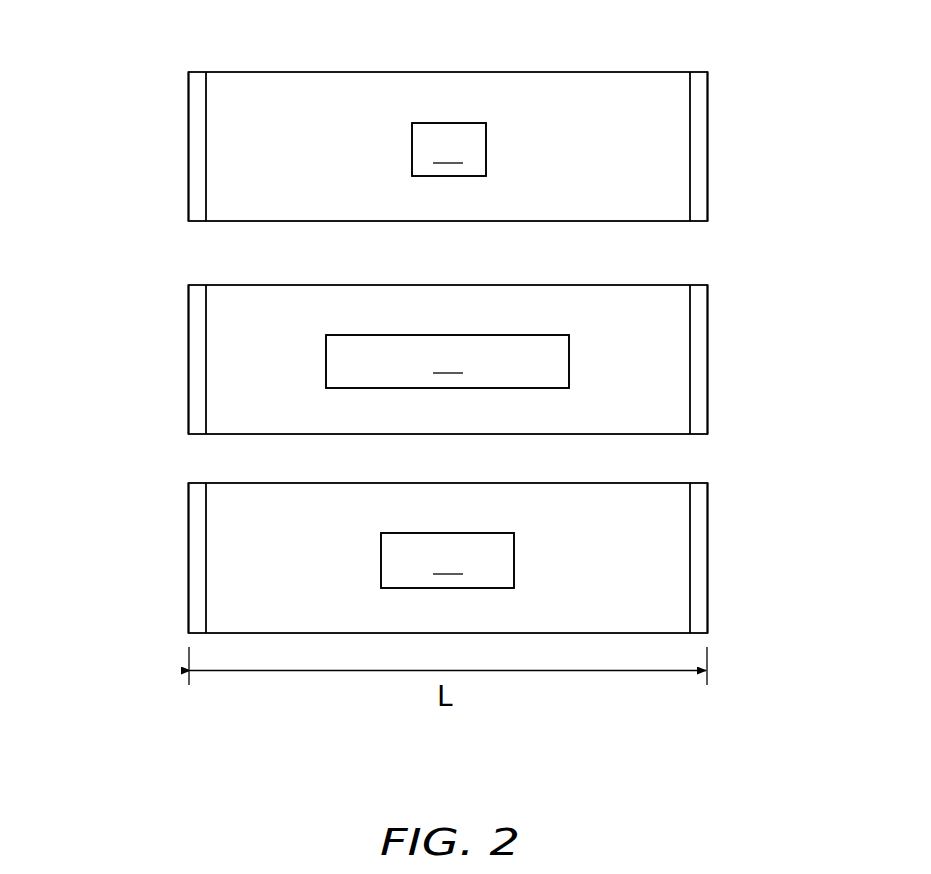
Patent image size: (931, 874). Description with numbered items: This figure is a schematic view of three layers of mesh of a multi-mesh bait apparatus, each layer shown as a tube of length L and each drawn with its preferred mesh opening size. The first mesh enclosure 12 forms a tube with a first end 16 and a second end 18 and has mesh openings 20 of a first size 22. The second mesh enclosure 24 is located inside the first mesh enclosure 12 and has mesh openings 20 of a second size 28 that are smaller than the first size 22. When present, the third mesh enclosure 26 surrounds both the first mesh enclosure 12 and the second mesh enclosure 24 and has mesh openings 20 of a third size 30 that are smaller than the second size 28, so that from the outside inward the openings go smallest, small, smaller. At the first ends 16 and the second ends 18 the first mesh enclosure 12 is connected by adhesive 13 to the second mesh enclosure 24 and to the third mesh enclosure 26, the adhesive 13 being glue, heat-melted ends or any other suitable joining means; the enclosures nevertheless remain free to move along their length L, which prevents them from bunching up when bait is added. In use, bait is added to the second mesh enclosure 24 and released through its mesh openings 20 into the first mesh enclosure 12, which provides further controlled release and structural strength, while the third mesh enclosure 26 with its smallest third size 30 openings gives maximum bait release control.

The first mesh enclosure 12 is at (678, 370).
The adhesive 13 is at (195, 90).
The first end 16 is at (708, 202).
The second end 18 is at (188, 157).
The mesh openings 20 is at (441, 120).
The first size 22 is at (447, 361).
The second mesh enclosure 24 is at (678, 567).
The third mesh enclosure 26 is at (678, 156).
The second size 28 is at (447, 560).
The third size 30 is at (449, 149).